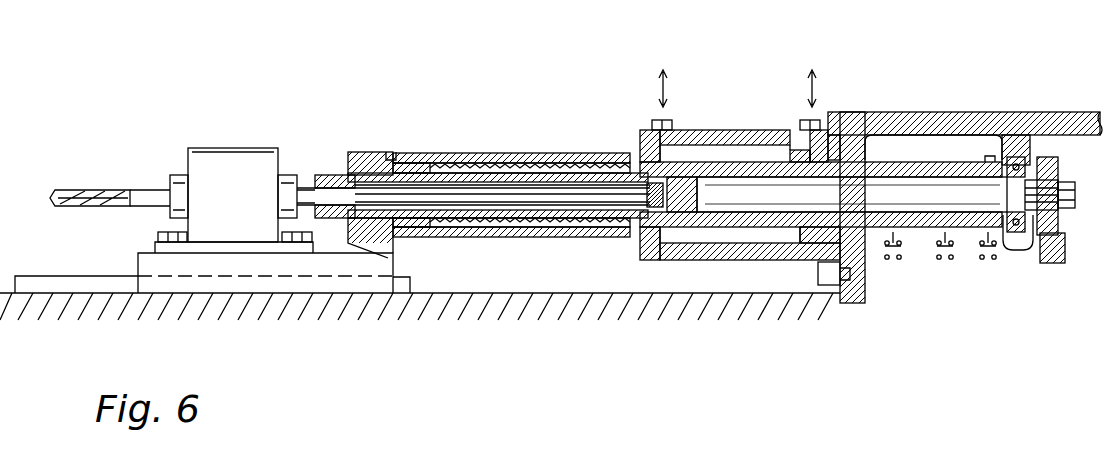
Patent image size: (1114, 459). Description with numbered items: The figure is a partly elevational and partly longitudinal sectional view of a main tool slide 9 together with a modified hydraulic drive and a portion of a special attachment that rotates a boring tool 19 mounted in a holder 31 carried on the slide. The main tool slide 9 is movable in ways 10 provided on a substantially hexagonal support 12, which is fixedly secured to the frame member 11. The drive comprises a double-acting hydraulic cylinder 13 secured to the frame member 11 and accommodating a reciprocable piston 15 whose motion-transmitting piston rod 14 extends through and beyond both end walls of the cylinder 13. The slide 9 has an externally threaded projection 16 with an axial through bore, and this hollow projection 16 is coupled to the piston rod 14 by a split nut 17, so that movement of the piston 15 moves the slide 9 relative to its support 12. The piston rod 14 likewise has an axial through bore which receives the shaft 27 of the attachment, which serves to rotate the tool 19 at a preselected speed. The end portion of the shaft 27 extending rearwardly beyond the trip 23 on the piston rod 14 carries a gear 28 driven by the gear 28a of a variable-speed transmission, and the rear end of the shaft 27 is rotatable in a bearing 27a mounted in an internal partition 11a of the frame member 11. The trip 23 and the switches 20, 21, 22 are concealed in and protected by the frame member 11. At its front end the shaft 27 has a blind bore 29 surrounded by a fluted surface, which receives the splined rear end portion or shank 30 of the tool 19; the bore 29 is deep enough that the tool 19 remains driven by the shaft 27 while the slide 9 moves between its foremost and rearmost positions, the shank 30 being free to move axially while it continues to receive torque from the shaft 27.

The main tool slide 9 is at (258, 278).
The ways 10 is at (80, 282).
The frame member 11 is at (855, 292).
The internal partition 11a is at (1018, 250).
The hexagonal support 12 is at (538, 300).
The double-acting hydraulic cylinder 13 is at (715, 255).
The motion-transmitting piston rod 14 is at (727, 170).
The piston 15 is at (797, 157).
The externally threaded projection 16 is at (405, 165).
The split nut 17 is at (528, 160).
The boring tool 19 is at (133, 190).
The switch 20 is at (893, 260).
The switch 21 is at (943, 260).
The switch 22 is at (988, 260).
The trip 23 is at (990, 160).
The shaft 27 is at (683, 190).
The bearing 27a is at (1015, 165).
The gear 28 is at (1050, 175).
The gear of variable-speed transmission 28a is at (1052, 262).
The blind bore 29 is at (330, 185).
The shank 30 is at (343, 200).
The holder 31 is at (248, 158).